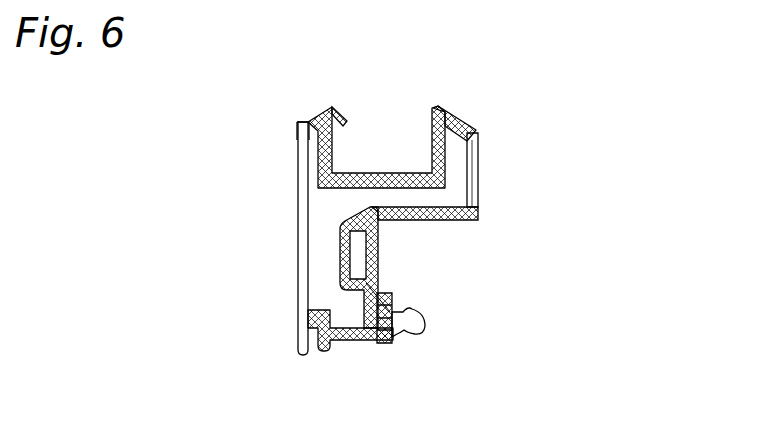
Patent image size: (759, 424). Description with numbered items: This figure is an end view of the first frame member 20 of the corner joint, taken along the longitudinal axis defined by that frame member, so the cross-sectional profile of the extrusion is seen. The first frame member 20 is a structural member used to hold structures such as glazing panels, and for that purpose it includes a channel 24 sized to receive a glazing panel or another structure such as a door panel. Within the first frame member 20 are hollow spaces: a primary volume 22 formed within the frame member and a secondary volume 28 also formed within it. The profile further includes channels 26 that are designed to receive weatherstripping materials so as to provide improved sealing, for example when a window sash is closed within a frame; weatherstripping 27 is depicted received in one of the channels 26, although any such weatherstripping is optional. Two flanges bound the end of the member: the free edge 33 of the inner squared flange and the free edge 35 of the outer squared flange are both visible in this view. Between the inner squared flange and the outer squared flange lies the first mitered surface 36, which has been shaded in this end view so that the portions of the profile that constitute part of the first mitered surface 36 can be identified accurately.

The first frame member 20 is at (517, 167).
The primary volume 22 is at (320, 250).
The channel 24 is at (373, 140).
The channels 26 is at (316, 344).
The weatherstripping 27 is at (392, 315).
The secondary volume 28 is at (358, 242).
The free edge of the inner squared flange 33 is at (477, 130).
The free edge of the outer squared flange 35 is at (303, 121).
The first mitered surface 36 is at (442, 220).